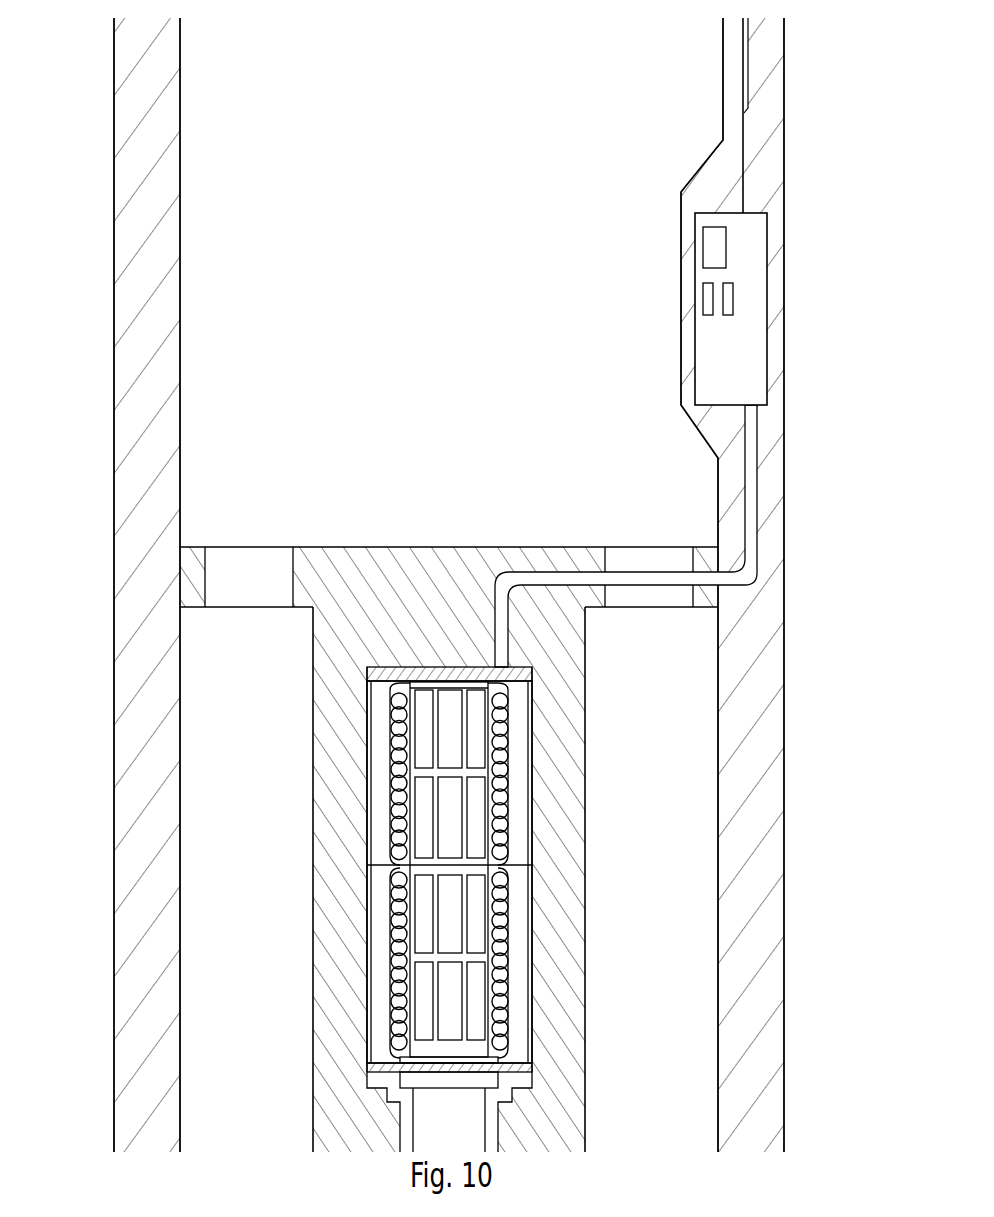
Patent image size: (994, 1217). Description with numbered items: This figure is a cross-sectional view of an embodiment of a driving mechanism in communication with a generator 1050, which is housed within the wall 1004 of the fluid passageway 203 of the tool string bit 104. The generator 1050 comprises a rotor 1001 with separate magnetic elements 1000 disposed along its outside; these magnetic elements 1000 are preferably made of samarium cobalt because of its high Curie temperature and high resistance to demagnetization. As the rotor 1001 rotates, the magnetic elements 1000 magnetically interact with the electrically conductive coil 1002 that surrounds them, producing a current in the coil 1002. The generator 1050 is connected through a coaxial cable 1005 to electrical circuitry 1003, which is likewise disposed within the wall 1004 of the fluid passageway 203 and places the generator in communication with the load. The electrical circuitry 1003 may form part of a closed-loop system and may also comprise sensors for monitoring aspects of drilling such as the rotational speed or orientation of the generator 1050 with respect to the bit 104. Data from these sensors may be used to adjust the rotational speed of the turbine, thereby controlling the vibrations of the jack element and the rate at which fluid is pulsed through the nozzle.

The tool string bit 104 is at (93, 220).
The fluid passageway 203 is at (220, 320).
The wall 1004 is at (183, 478).
The electrical circuitry 1003 is at (740, 373).
The coaxial cable 1005 is at (752, 494).
The magnetic elements 1000 is at (474, 752).
The coil 1002 is at (396, 803).
The rotor 1001 is at (453, 1121).
The generator 1050 is at (608, 897).